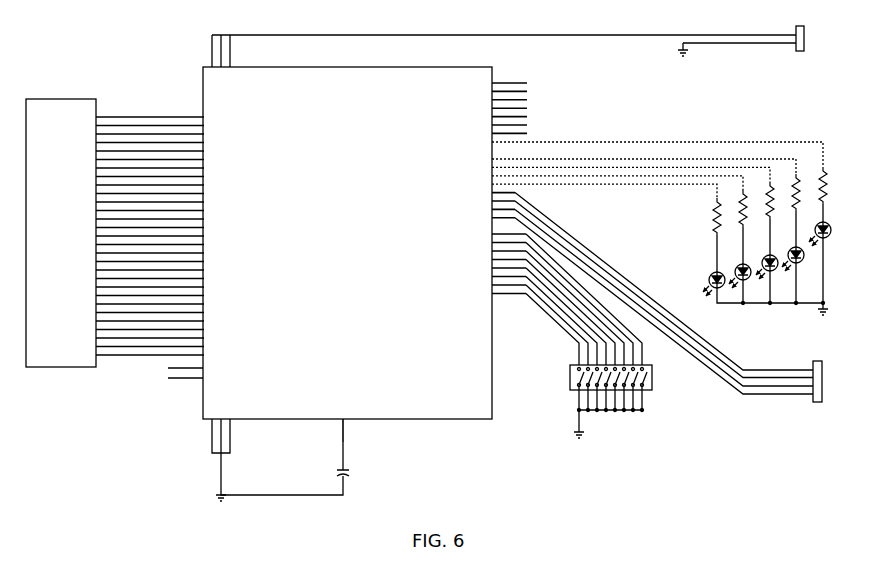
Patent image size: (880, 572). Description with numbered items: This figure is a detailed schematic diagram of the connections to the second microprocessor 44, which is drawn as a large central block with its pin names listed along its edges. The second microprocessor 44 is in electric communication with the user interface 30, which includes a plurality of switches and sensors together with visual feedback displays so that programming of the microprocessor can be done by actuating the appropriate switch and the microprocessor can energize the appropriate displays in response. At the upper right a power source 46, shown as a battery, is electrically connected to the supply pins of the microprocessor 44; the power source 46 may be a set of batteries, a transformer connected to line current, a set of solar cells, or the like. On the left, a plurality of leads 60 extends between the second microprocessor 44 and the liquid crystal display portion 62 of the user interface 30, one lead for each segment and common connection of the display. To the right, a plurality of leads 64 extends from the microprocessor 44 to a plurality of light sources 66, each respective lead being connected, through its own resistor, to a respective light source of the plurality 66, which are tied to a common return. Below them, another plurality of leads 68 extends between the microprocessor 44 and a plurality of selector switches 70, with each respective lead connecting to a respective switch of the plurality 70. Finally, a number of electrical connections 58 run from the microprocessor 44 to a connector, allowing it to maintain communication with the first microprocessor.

The user interface 30 is at (445, 274).
The second microprocessor 44 is at (334, 245).
The power source 46 is at (804, 40).
The electrical connections 58 is at (651, 285).
The plurality of leads 60 is at (143, 105).
The liquid crystal display portion 62 is at (52, 226).
The plurality of leads 64 is at (684, 203).
The plurality of light sources 66 is at (804, 258).
The plurality of leads 68 is at (544, 319).
The plurality of selector switches 70 is at (652, 388).